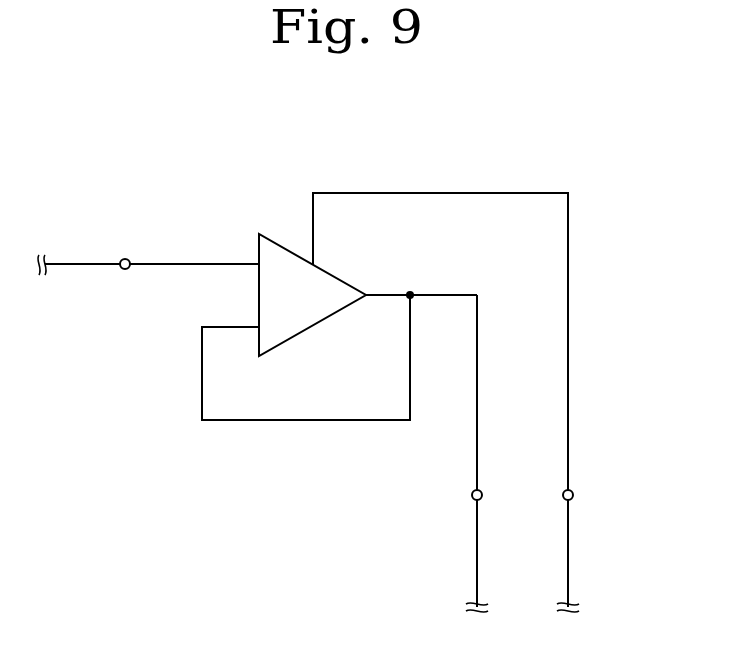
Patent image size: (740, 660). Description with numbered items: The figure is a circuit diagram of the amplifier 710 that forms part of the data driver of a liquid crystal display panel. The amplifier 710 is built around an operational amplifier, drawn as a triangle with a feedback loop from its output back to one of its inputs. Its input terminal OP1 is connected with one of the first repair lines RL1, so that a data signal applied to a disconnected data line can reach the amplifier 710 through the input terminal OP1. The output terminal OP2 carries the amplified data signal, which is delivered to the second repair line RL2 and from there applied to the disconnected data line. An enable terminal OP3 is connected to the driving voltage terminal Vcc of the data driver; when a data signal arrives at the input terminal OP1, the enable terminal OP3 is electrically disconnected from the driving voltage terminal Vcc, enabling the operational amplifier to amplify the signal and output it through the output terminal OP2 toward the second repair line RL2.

The amplifier 710 is at (657, 124).
The input terminal OP1 is at (183, 250).
The output terminal OP2 is at (456, 495).
The enable terminal OP3 is at (589, 495).
The first repair line RL1 is at (76, 262).
The second repair line RL2 is at (477, 568).
The driving voltage terminal Vcc is at (568, 568).